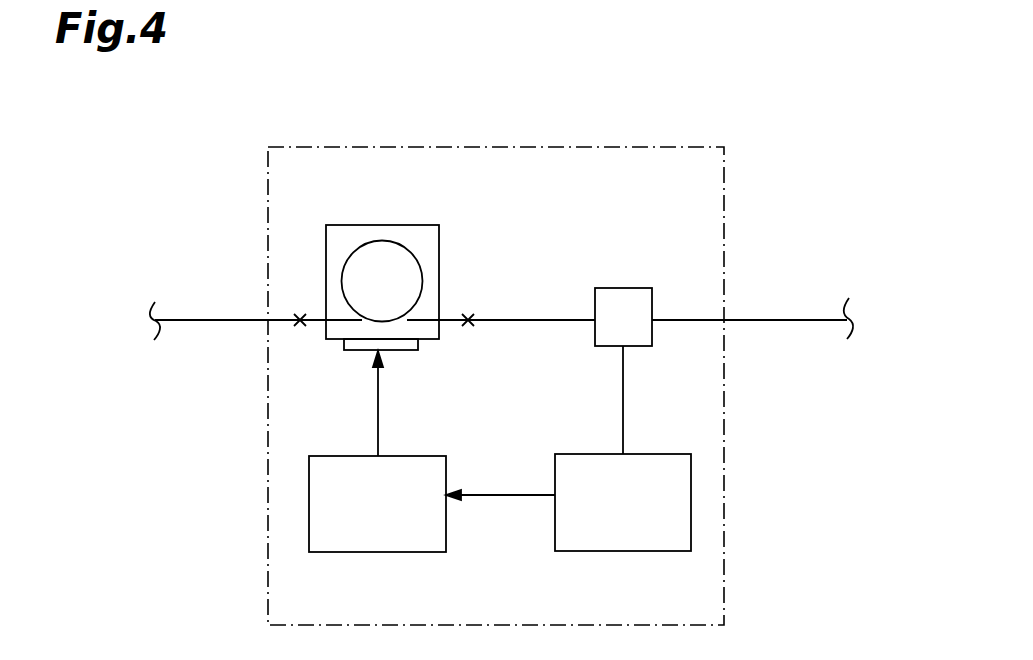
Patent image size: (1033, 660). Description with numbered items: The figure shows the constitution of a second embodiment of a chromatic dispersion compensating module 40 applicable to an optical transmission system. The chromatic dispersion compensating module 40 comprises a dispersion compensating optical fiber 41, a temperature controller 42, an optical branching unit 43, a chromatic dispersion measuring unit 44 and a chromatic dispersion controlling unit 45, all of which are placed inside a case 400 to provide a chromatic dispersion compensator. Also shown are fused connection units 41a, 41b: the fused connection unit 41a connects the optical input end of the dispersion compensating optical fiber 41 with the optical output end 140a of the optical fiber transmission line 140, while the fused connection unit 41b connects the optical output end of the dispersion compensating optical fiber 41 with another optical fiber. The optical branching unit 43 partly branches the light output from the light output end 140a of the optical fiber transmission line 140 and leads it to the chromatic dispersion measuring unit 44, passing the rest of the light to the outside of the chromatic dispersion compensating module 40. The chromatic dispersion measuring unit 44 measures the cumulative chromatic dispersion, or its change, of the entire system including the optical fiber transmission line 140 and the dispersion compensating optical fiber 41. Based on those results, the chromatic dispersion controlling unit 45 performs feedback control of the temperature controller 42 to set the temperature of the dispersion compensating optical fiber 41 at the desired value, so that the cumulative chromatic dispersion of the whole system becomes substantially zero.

The chromatic dispersion compensating module 40 is at (518, 147).
The optical fiber transmission line 140 is at (205, 320).
The optical output end of the optical fiber transmission line 140a is at (300, 320).
The dispersion compensating optical fiber 41 is at (412, 225).
The fused connection unit 41a is at (300, 320).
The fused connection unit 41b is at (468, 320).
The case 400 is at (440, 255).
The temperature controller 42 is at (402, 350).
The optical branching unit 43 is at (630, 288).
The chromatic dispersion measuring unit 44 is at (614, 552).
The chromatic dispersion controlling unit 45 is at (372, 553).